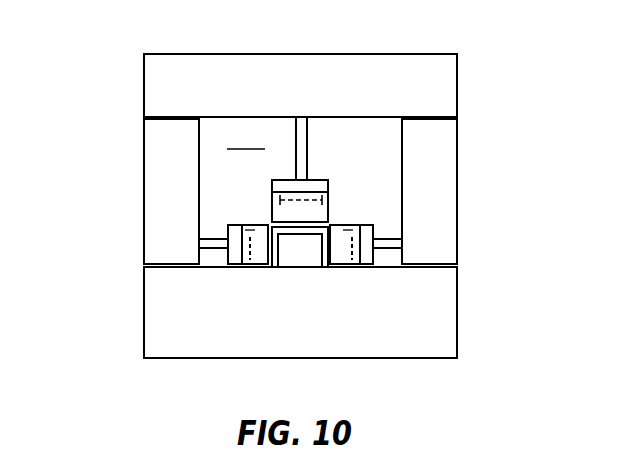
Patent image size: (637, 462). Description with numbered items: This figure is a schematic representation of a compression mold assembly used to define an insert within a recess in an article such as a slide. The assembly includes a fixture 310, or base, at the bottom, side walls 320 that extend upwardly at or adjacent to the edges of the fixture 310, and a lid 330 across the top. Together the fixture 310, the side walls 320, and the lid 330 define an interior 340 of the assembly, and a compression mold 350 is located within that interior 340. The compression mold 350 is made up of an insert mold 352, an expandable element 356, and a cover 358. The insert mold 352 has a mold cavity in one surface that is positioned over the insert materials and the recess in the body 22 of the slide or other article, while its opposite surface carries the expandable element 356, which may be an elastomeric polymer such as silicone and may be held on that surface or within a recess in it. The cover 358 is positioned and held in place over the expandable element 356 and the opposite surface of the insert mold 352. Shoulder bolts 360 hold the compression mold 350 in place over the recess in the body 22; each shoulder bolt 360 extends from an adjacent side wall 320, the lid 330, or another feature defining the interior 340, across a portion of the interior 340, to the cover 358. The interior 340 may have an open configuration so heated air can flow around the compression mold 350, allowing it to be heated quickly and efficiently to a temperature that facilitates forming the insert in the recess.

The body 22 is at (323, 250).
The fixture 310 is at (300, 252).
The side walls 320 is at (440, 250).
The lid 330 is at (162, 83).
The interior 340 is at (247, 138).
The compression mold 350 is at (170, 180).
The insert mold 352 is at (271, 209).
The expandable element 356 is at (280, 200).
The cover 358 is at (271, 185).
The shoulder bolts 360 is at (302, 143).